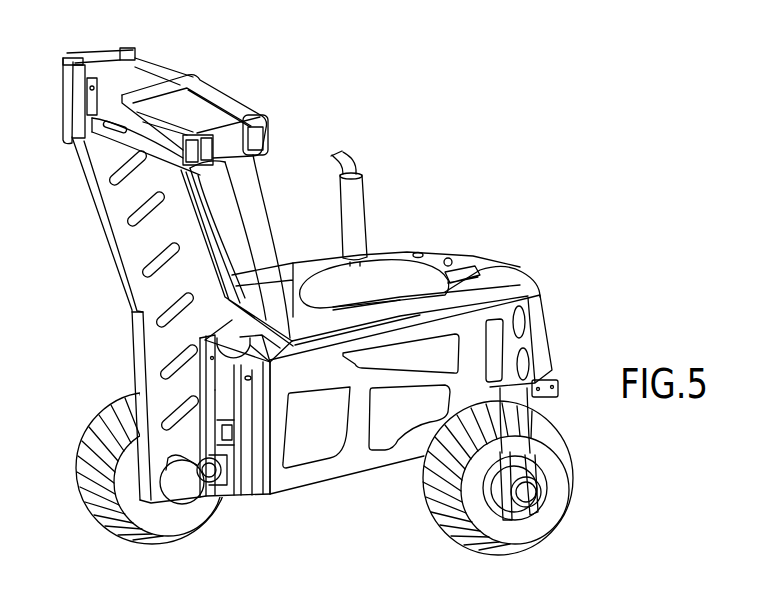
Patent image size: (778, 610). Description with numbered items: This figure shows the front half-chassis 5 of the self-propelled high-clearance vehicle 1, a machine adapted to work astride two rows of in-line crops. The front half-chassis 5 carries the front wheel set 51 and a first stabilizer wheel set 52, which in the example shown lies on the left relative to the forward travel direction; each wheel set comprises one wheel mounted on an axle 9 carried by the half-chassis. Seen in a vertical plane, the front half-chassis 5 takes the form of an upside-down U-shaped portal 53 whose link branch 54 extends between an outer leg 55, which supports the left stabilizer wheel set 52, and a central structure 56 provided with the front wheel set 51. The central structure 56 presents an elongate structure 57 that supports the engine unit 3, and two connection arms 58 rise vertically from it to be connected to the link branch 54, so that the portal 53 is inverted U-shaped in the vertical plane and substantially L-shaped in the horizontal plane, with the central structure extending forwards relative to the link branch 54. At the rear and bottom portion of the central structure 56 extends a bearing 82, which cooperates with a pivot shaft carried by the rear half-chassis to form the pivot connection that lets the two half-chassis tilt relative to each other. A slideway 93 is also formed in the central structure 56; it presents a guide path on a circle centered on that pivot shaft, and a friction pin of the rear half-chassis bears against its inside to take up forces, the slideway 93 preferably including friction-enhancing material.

The self-propelled high-clearance vehicle 1 is at (383, 77).
The engine unit 3 is at (393, 272).
The front half-chassis 5 is at (318, 484).
The axle 9 is at (187, 487).
The front wheel set 51 is at (553, 463).
The first stabilizer wheel set 52 is at (90, 458).
The upside-down U-shaped portal 53 is at (206, 75).
The link branch 54 is at (222, 99).
The outer leg 55 is at (118, 252).
The central structure 56 is at (286, 238).
The elongate structure 57 is at (381, 460).
The connection arms 58 is at (253, 211).
The bearing 82 is at (222, 470).
The slideway 93 is at (83, 145).